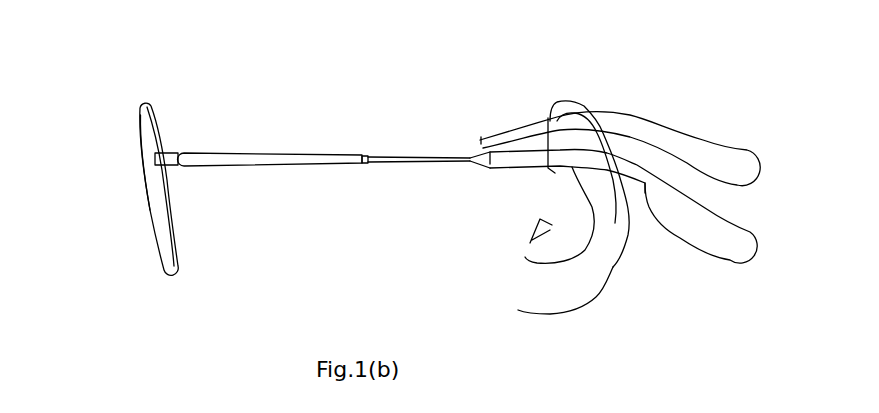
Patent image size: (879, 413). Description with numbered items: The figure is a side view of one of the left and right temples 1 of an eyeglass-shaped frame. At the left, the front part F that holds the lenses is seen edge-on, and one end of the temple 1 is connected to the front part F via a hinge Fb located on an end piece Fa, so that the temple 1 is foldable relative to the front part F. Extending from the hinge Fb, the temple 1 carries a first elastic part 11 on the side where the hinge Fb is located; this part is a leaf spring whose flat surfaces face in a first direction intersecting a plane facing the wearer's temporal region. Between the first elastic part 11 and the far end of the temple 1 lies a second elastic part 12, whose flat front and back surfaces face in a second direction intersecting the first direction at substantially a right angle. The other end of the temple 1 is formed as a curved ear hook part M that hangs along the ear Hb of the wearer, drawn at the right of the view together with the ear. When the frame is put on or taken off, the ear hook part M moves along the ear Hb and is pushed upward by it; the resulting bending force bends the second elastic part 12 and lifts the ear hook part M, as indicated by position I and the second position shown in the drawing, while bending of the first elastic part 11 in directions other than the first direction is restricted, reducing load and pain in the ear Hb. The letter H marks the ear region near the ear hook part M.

The front part F is at (142, 102).
The end piece Fa is at (157, 162).
The hinge Fb is at (157, 152).
The temple 1 is at (207, 140).
The first elastic part 11 is at (277, 165).
The second elastic part 12 is at (398, 158).
The ear hook part M is at (627, 115).
The ear H is at (646, 184).
The position I is at (631, 207).
The ear Hb is at (582, 285).